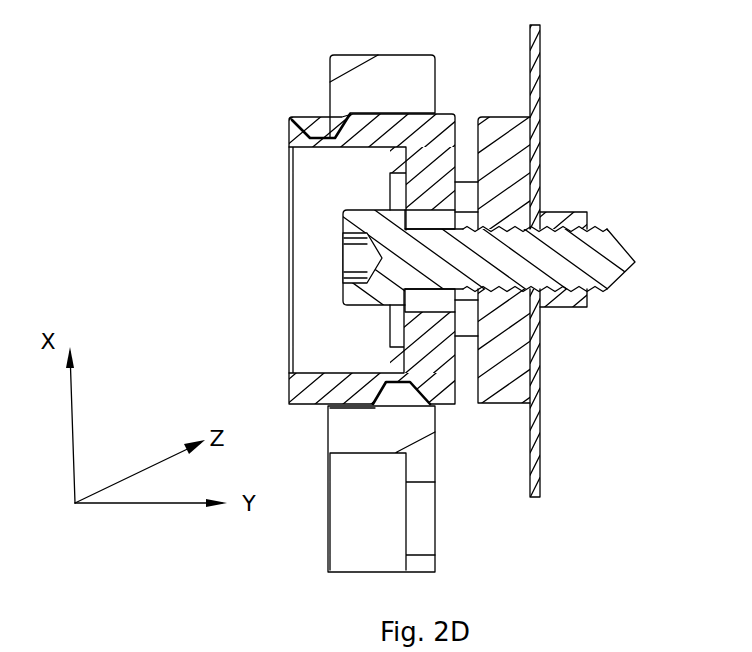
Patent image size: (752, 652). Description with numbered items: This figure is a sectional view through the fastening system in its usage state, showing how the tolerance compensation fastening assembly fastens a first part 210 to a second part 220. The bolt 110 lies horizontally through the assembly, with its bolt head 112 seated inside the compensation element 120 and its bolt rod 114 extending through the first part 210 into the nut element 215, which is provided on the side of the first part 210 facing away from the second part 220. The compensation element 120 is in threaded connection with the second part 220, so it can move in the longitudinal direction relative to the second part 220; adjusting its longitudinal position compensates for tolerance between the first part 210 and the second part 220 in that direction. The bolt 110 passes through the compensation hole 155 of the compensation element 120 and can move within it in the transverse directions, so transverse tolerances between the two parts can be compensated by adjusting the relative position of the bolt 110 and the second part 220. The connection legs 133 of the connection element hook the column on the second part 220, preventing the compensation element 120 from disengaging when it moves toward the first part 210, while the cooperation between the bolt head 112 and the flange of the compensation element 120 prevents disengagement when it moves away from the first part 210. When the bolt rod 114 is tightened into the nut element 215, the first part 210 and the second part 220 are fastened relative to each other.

The bolt 110 is at (350, 243).
The bolt head 112 is at (343, 137).
The bolt rod 114 is at (602, 255).
The compensation element 120 is at (440, 117).
The connection legs 133 is at (502, 138).
The compensation hole 155 is at (423, 218).
The first part 210 is at (533, 97).
The nut element 215 is at (575, 218).
The second part 220 is at (427, 465).